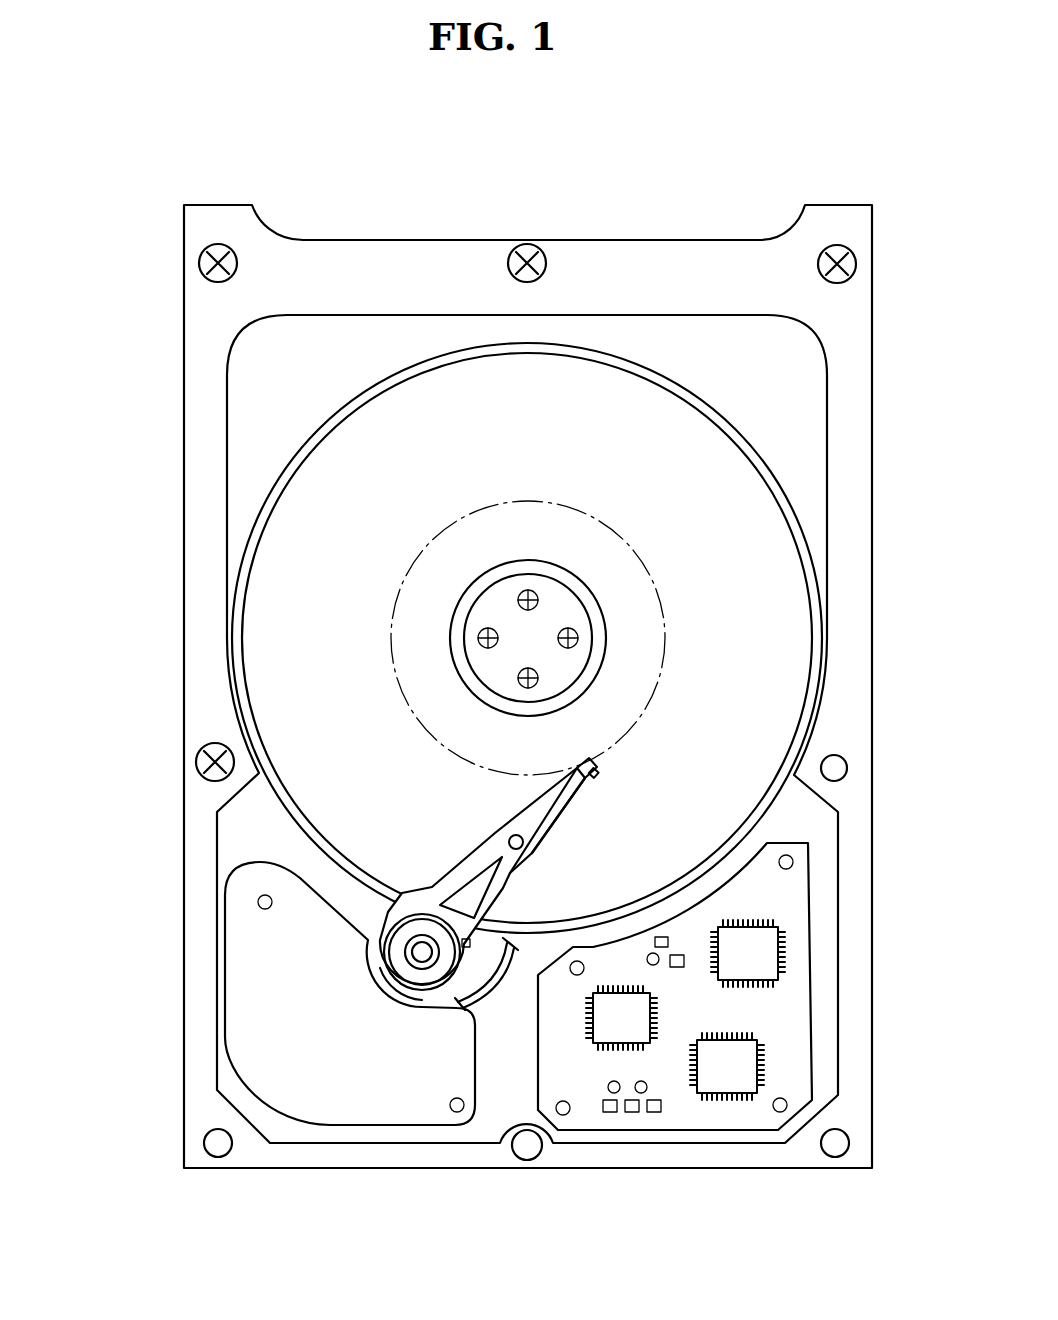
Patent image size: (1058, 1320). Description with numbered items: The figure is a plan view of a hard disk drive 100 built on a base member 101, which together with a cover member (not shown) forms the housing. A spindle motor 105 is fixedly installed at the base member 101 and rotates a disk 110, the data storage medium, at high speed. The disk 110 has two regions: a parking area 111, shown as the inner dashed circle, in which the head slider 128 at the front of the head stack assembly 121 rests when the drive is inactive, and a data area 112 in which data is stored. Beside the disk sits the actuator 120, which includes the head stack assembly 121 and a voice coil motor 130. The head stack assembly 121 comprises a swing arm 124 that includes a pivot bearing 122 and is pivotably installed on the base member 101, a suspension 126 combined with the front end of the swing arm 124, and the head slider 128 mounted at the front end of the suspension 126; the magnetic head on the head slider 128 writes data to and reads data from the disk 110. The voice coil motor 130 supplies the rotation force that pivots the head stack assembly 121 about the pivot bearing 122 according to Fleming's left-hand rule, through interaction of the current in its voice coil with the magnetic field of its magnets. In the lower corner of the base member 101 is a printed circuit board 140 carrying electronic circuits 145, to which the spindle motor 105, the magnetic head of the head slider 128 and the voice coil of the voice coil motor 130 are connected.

The hard disk drive 100 is at (640, 165).
The base member 101 is at (812, 413).
The spindle motor 105 is at (488, 620).
The disk 110 is at (435, 638).
The parking area 111 is at (400, 663).
The data area 112 is at (288, 712).
The actuator 120 is at (333, 866).
The head stack assembly 121 is at (463, 866).
The pivot bearing 122 is at (405, 932).
The swing arm 124 is at (453, 890).
The suspension 126 is at (538, 813).
The head slider 128 is at (580, 762).
The voice coil motor 130 is at (350, 1107).
The printed circuit board 140 is at (745, 986).
The electronic circuits 145 is at (762, 958).